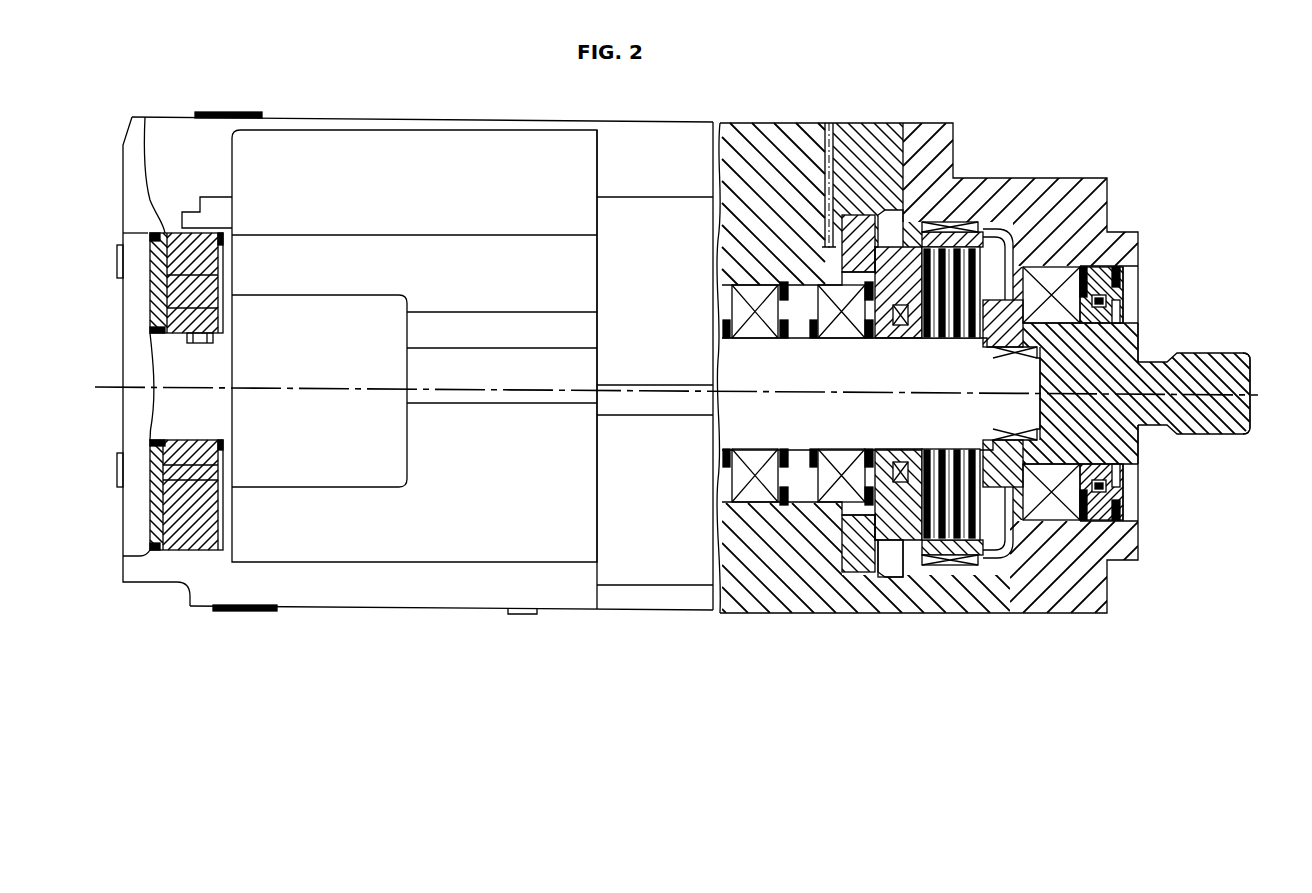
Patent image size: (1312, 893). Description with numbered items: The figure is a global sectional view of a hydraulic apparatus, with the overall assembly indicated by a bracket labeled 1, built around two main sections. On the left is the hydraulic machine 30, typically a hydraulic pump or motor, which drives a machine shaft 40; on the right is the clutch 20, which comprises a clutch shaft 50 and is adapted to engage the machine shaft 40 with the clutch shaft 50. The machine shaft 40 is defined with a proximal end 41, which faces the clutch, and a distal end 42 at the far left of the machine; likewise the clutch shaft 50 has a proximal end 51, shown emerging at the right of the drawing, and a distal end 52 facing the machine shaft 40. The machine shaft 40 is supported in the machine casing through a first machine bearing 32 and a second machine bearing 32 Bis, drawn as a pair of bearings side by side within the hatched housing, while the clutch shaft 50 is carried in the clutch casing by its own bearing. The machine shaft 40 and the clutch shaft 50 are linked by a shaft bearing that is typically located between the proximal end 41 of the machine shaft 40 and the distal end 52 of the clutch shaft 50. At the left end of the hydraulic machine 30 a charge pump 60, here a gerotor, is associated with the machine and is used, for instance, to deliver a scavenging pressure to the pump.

The electric motor-reducer assembly 1 is at (1184, 157).
The clutch 20 is at (1140, 114).
The hydraulic machine 30 is at (845, 112).
The first machine bearing 32 is at (840, 292).
The second machine bearing 32 Bis is at (757, 295).
The machine shaft 40 is at (168, 349).
The proximal end of the machine shaft 41 is at (1013, 412).
The distal end of the machine shaft 42 is at (168, 424).
The clutch shaft 50 is at (1233, 357).
The proximal end of the clutch shaft 51 is at (1243, 398).
The distal end of the clutch shaft 52 is at (1093, 350).
The charge pump 60 is at (190, 290).